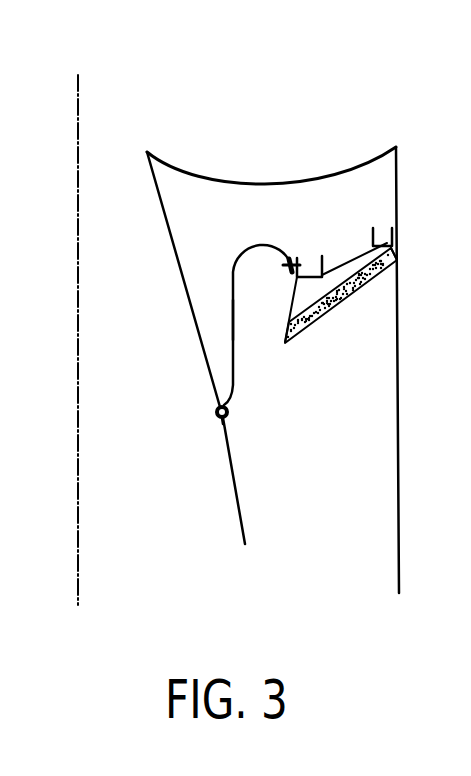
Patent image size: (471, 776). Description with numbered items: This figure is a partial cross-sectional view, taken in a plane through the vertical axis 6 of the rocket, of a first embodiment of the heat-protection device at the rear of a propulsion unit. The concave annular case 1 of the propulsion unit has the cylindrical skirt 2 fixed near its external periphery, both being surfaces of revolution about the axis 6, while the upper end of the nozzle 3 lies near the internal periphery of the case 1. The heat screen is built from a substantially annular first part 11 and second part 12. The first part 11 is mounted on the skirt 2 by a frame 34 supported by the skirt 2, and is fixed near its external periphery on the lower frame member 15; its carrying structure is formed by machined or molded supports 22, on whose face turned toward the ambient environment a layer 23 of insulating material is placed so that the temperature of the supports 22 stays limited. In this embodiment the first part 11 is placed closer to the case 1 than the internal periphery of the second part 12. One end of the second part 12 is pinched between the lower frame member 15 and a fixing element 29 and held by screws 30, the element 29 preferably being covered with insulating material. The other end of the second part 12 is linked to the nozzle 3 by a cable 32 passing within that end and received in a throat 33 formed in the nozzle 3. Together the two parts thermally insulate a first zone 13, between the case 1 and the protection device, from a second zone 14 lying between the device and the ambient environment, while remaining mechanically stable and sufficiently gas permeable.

The case 1 is at (286, 182).
The skirt 2 is at (399, 508).
The nozzle 3 is at (243, 514).
The vertical axis 6 is at (78, 510).
The first part 11 is at (346, 316).
The second part 12 is at (229, 311).
The first zone 13 is at (199, 237).
The second zone 14 is at (349, 422).
The lower frame member 15 is at (330, 256).
The supports 22 is at (378, 273).
The layer of insulating material 23 is at (362, 297).
The fixing element 29 is at (232, 278).
The screws 30 is at (290, 262).
The cable 32 is at (215, 411).
The throat 33 is at (222, 425).
The frame 34 is at (397, 233).